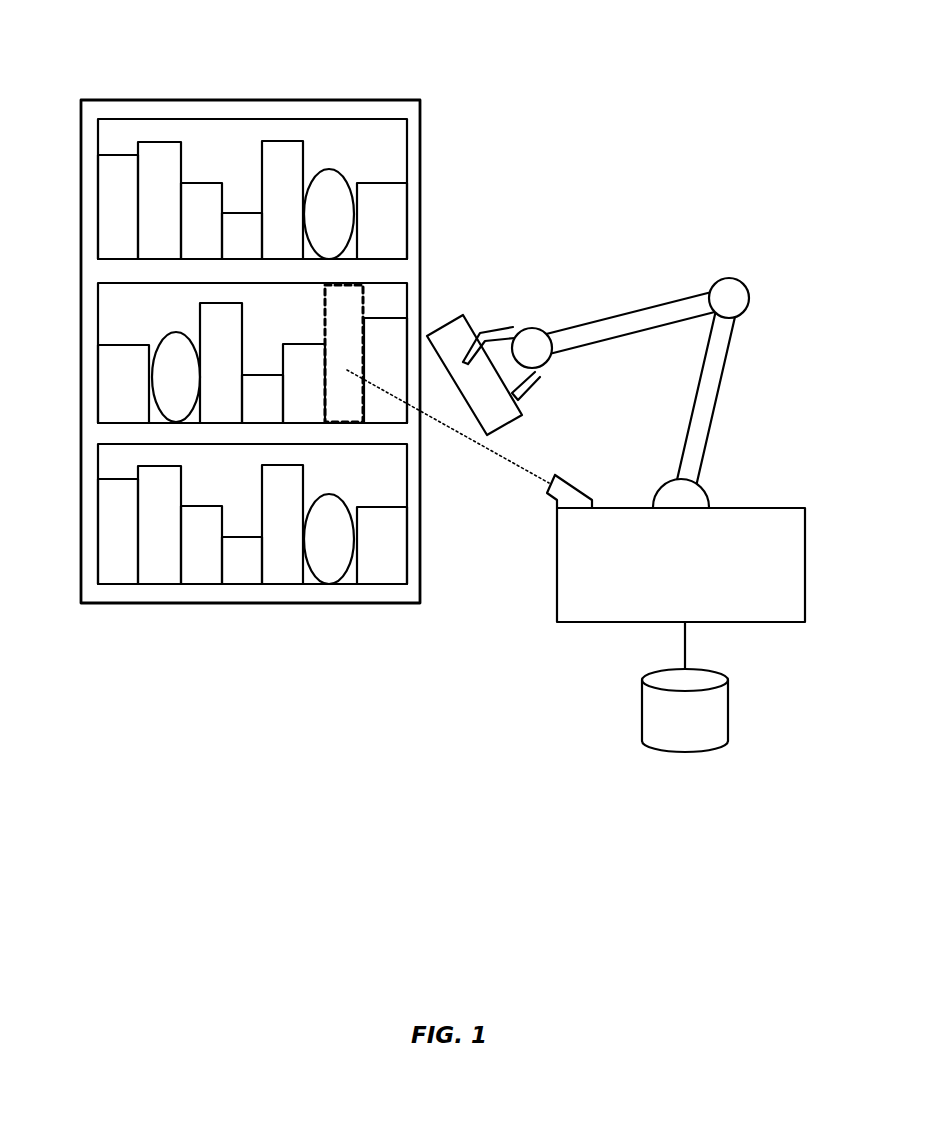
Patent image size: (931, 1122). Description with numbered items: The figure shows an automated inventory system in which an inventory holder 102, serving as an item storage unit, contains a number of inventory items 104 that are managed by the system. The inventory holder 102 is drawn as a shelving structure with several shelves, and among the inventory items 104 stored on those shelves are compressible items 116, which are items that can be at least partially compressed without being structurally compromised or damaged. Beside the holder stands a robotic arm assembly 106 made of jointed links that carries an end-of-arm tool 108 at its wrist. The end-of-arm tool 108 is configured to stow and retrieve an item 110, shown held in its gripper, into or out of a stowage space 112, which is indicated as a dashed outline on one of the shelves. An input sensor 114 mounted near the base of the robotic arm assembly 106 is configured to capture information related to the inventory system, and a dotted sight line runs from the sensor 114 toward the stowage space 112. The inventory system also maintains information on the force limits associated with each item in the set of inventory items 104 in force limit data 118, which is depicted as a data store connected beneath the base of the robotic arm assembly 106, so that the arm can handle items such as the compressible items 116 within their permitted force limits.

The inventory holder 102 is at (398, 100).
The inventory items 104 is at (382, 217).
The robotic arm assembly 106 is at (744, 283).
The end-of-arm tool 108 is at (534, 329).
The item 110 is at (462, 320).
The stowage space 112 is at (345, 410).
The input sensors 114 is at (564, 480).
The compressible items 116 is at (170, 348).
The force limit data 118 is at (685, 710).